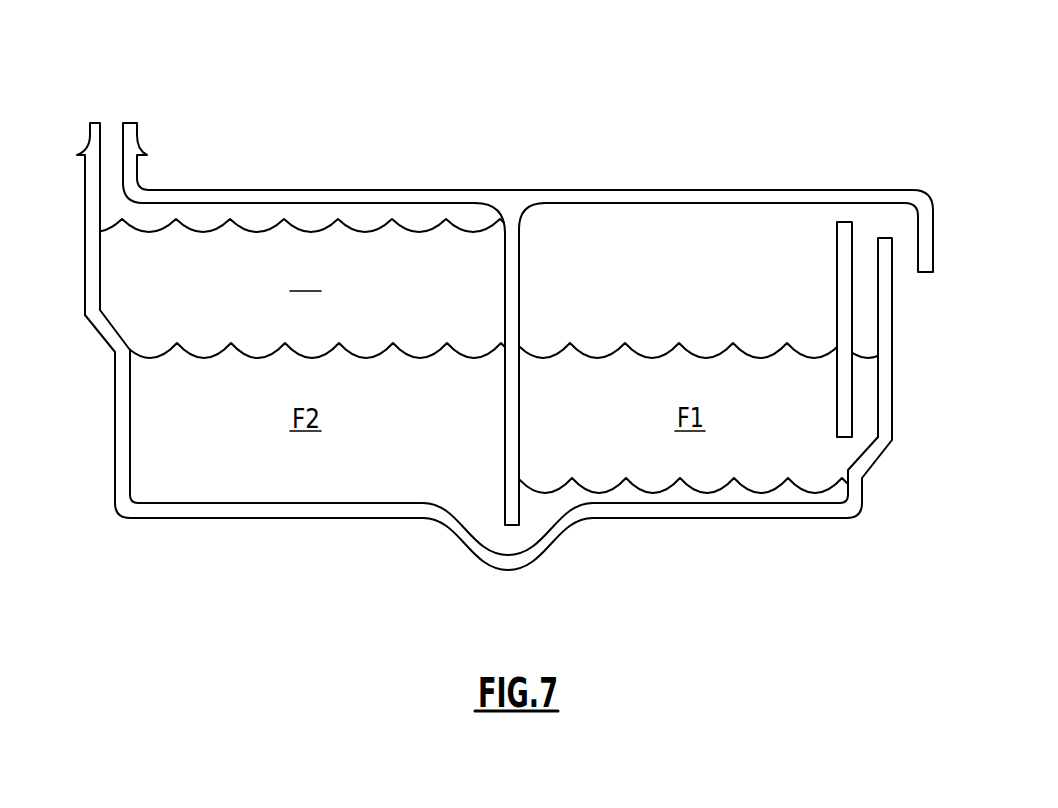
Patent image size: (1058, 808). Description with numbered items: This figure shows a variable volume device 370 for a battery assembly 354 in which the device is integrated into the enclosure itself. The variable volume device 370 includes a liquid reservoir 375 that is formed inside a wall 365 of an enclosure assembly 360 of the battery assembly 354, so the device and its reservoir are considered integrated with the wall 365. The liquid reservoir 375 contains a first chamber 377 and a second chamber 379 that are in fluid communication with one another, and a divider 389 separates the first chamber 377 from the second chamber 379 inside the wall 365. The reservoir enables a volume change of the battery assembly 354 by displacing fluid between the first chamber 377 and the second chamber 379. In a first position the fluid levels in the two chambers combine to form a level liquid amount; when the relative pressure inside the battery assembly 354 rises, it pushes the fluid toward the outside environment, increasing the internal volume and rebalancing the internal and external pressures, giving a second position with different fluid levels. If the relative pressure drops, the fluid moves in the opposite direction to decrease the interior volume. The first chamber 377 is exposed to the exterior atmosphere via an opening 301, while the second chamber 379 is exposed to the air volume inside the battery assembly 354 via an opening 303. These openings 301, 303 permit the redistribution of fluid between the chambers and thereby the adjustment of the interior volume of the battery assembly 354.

The battery assembly 354 is at (508, 87).
The opening 301 is at (108, 106).
The opening 303 is at (907, 288).
The enclosure assembly 360 is at (191, 177).
The variable volume device 370 is at (651, 177).
The liquid reservoir 375 is at (458, 196).
The first chamber 377 is at (312, 213).
The second chamber 379 is at (748, 213).
The divider 389 is at (513, 265).
The wall 365 is at (115, 372).